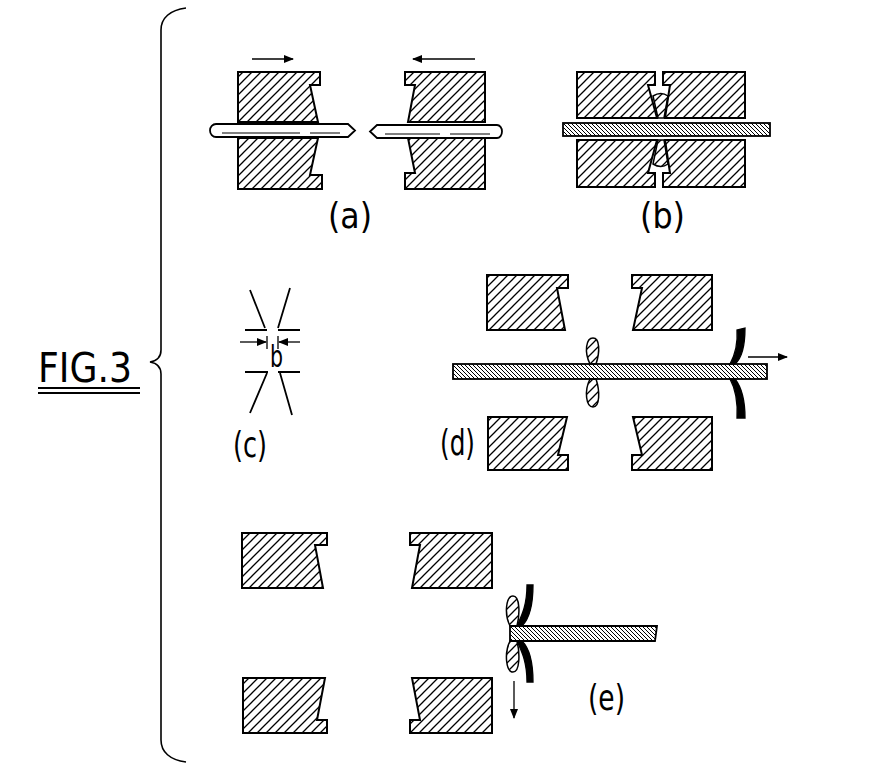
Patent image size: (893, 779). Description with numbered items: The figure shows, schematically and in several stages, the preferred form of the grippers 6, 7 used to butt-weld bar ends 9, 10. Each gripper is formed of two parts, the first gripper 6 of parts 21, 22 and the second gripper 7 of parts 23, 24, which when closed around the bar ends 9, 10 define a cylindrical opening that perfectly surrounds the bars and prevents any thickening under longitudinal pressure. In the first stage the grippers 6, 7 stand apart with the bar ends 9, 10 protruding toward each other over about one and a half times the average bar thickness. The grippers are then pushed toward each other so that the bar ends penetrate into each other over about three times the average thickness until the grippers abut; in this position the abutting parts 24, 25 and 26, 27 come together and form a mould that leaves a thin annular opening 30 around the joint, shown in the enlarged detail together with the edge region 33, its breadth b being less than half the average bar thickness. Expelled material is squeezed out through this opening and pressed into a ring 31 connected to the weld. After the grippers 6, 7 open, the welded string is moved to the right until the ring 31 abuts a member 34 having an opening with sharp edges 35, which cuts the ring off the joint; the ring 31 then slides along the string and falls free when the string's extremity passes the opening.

The gripper 6 is at (246, 128).
The gripper 7 is at (531, 132).
The bar end 9 is at (330, 126).
The bar end 10 is at (383, 128).
The gripper part 21 is at (238, 82).
The gripper part 22 is at (238, 178).
The gripper part 23 is at (470, 92).
The gripper part 24 is at (470, 165).
The abutting part 25 is at (675, 72).
The abutting part 26 is at (645, 188).
The abutting part 27 is at (668, 185).
The annular opening 30 is at (278, 368).
The ring 31 is at (672, 72).
The lower die edge corners 33 is at (272, 403).
The member 34 is at (748, 328).
The sharp edge 35 is at (745, 380).